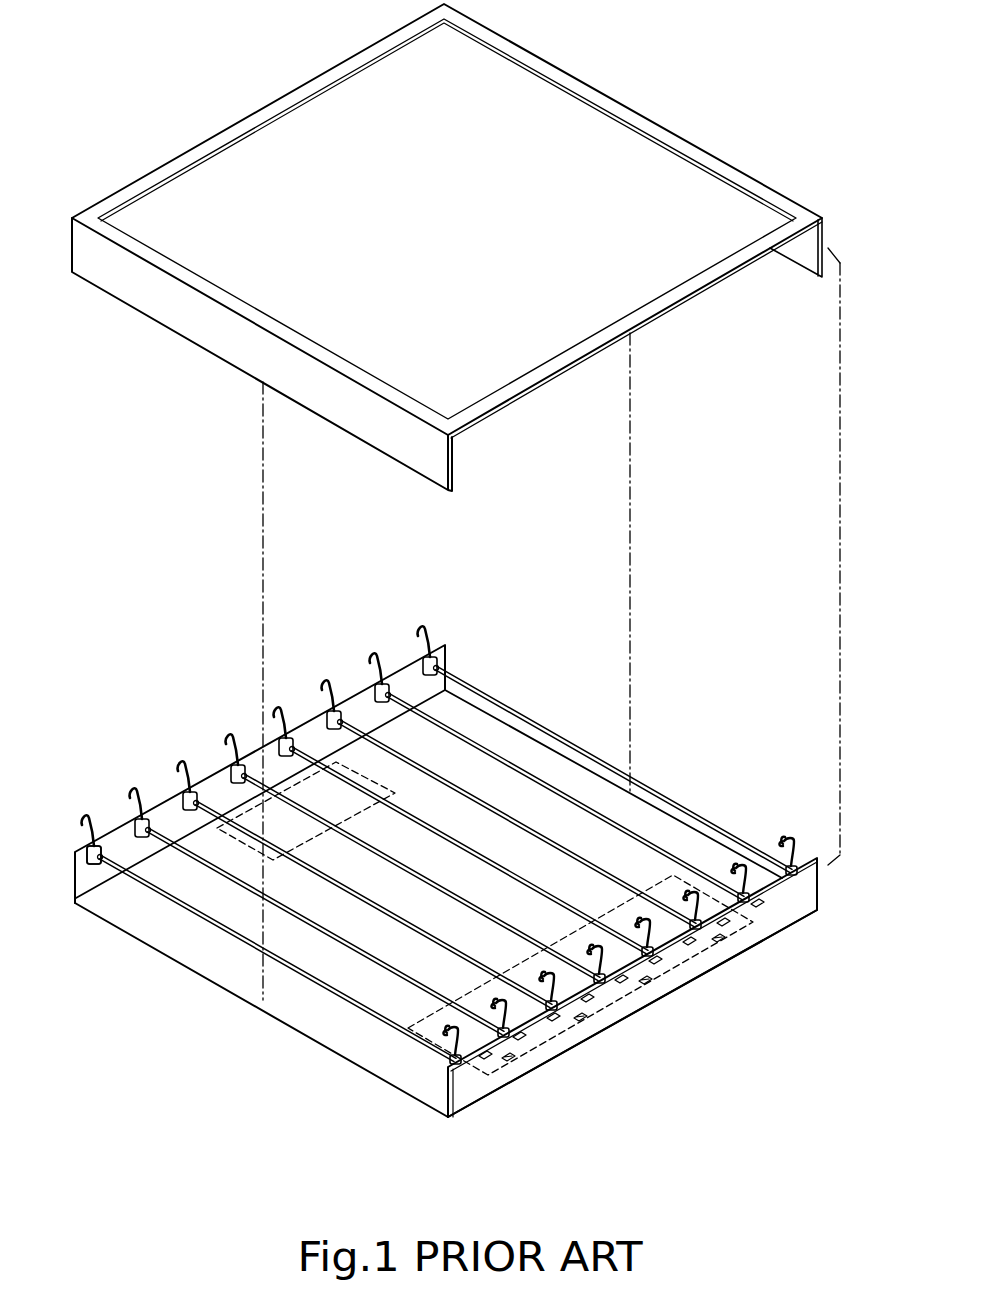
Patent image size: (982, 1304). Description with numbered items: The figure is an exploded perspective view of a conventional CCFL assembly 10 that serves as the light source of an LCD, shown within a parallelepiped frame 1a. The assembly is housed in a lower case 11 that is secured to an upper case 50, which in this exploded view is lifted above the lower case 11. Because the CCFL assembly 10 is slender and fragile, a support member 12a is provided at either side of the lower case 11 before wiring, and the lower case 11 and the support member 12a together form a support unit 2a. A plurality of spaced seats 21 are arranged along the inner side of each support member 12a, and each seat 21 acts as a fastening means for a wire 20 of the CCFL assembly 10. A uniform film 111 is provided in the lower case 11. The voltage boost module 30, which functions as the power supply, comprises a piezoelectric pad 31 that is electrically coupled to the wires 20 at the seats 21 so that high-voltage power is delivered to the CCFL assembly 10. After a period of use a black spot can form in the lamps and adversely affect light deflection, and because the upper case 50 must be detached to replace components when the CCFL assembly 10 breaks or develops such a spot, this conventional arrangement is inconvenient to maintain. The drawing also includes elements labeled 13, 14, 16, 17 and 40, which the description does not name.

The upper case 50 is at (447, 247).
The optical plate 14 is at (478, 368).
The parallelepiped frame 1a is at (840, 540).
The rear side wall 13 is at (407, 683).
The circuit board 40 is at (235, 818).
The wire 20 is at (96, 846).
The seat 21 is at (88, 855).
The CCFL assembly 10 is at (154, 901).
The uniform film 111 is at (428, 903).
The lower case 11 is at (300, 1030).
The lamp tube 17 is at (378, 1018).
The lamp connector 16 is at (441, 1058).
The support unit 2a is at (478, 1103).
The support member 12a is at (632, 1021).
The piezoelectric pad 31 is at (664, 964).
The voltage boost module 30 is at (688, 963).